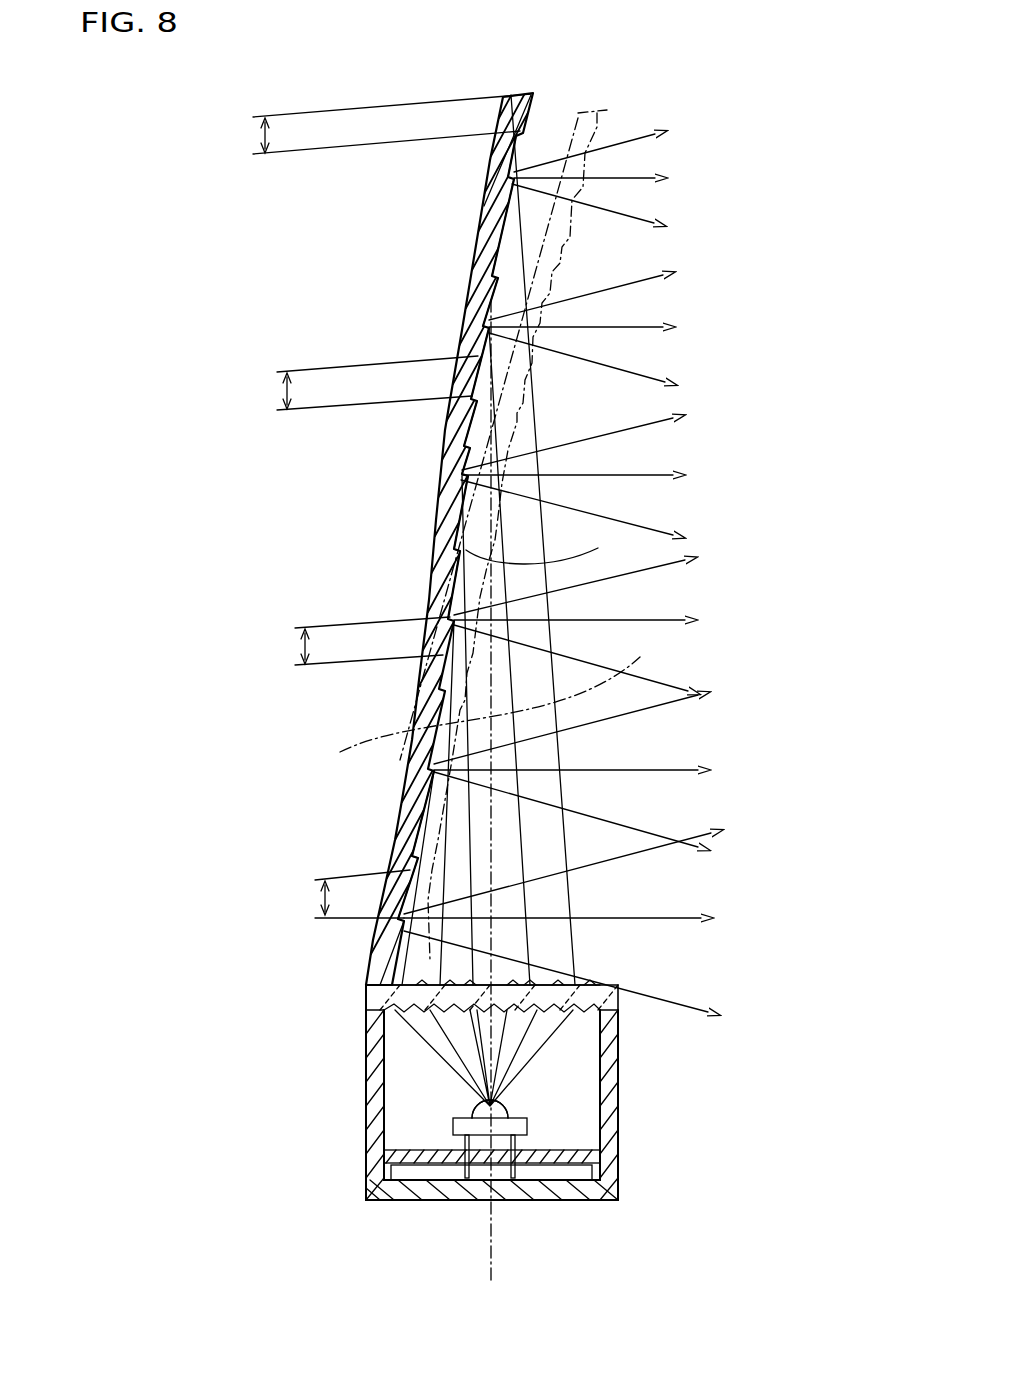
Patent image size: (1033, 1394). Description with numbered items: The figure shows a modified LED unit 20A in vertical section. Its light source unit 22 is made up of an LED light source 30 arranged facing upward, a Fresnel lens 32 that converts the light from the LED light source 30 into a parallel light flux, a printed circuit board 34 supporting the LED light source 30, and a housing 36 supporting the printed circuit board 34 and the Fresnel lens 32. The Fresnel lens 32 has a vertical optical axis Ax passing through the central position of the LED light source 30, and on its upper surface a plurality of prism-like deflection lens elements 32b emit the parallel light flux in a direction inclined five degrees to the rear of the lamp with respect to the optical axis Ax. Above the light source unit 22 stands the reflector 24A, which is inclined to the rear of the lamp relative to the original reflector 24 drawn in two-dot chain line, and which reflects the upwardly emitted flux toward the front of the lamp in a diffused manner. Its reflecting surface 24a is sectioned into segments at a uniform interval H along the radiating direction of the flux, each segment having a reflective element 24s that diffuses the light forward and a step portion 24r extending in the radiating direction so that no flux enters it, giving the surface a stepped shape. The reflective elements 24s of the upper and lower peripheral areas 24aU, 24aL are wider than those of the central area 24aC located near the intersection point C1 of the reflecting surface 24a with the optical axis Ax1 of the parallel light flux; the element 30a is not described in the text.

The LED unit 20A is at (308, 297).
The light source unit 22 is at (350, 1029).
The reflector 24 is at (580, 116).
The reflector 24A is at (428, 514).
The reflective element 24s is at (515, 179).
The step portion 24r is at (512, 187).
The upper peripheral area 24aU is at (492, 277).
The reflecting surface 24a is at (472, 446).
The central area 24aC is at (455, 620).
The lower peripheral area 24aL is at (418, 868).
The intersection point C1 is at (541, 549).
The optical axis Ax is at (503, 690).
The optical axis of the parallel light flux Ax1 is at (434, 450).
The uniform interval H is at (380, 507).
The LED light source 30 is at (478, 1110).
The light emitting portion 30a is at (400, 1010).
The Fresnel lens 32 is at (605, 990).
The prism-like deflection lens element 32b is at (515, 985).
The printed circuit board 34 is at (565, 1150).
The housing 36 is at (608, 1092).